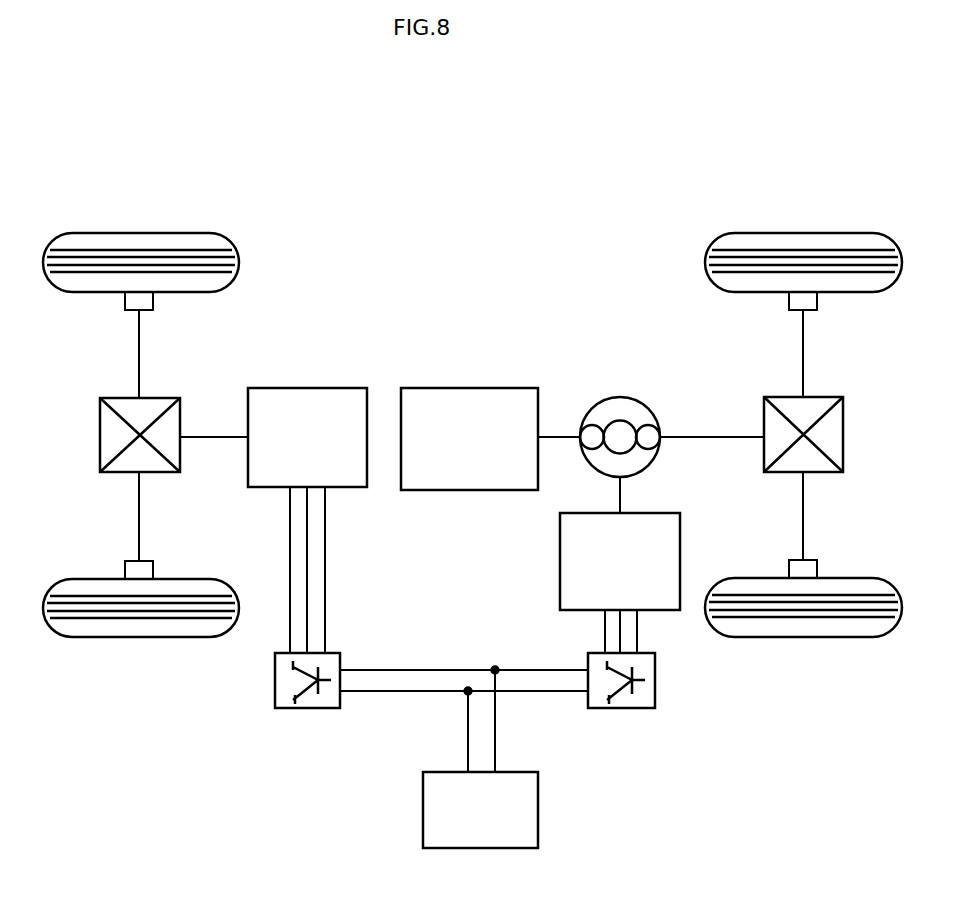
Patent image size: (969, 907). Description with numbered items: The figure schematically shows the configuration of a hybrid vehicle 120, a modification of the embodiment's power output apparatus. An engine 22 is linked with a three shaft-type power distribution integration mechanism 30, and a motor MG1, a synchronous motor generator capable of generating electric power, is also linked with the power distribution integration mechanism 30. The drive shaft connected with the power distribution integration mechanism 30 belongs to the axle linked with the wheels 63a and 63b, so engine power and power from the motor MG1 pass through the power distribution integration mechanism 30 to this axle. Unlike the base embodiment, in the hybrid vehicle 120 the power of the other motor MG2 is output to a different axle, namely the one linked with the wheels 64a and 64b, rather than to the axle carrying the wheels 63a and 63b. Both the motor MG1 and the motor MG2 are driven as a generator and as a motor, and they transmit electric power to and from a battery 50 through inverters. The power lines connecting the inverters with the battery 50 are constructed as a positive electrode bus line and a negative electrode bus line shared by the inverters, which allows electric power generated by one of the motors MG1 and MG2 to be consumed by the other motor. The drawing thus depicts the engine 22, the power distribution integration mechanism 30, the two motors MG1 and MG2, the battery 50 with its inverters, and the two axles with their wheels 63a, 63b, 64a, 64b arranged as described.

The hybrid vehicle 120 is at (503, 211).
The engine 22 is at (470, 386).
The power distribution integration mechanism 30 is at (620, 397).
The motor MG1 is at (560, 560).
The motor MG2 is at (305, 387).
The battery 50 is at (538, 810).
The wheel 63a is at (805, 232).
The wheel 63b is at (805, 637).
The wheel 64a is at (139, 232).
The wheel 64b is at (139, 637).